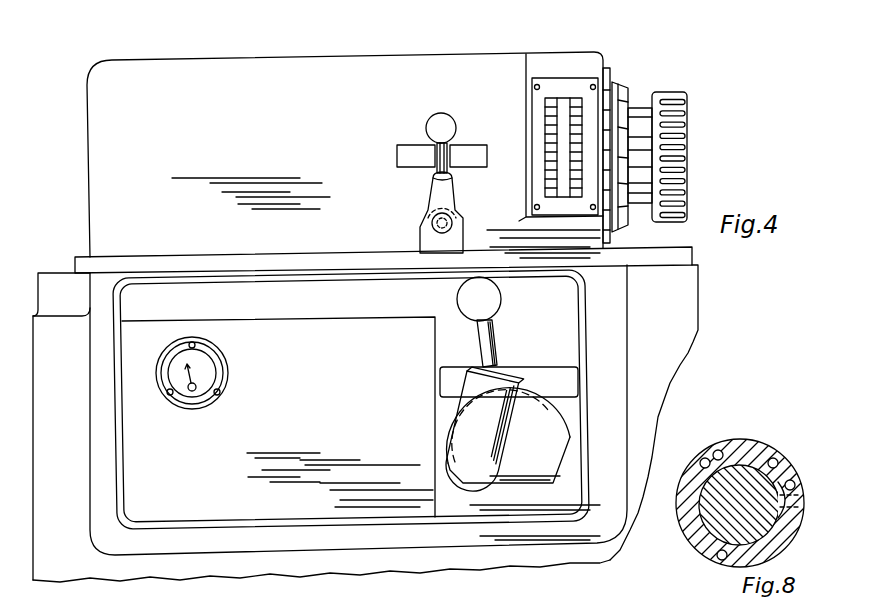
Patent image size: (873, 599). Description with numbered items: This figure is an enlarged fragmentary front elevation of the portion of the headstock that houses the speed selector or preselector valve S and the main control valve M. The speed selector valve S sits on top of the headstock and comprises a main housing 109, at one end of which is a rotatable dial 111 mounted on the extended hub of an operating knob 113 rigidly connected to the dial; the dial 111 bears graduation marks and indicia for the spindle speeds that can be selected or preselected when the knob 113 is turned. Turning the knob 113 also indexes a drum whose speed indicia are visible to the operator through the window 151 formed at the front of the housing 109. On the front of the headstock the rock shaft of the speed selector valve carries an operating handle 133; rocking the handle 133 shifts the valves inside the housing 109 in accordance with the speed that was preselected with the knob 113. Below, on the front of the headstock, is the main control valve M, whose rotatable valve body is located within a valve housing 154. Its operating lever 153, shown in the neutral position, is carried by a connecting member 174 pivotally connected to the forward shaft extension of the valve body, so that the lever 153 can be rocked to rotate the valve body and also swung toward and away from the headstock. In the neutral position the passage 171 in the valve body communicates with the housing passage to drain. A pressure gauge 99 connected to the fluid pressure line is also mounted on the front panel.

In FIG. 4, the speed selector valve S is at (362, 50).
In FIG. 4, the main housing 109 is at (345, 155).
In FIG. 4, the window 151 is at (563, 100).
In FIG. 4, the rotatable dial 111 is at (627, 90).
In FIG. 4, the operating knob 113 is at (687, 108).
In FIG. 4, the operating handle 133 is at (447, 189).
In FIG. 4, the valve housing 154 is at (365, 429).
In FIG. 4, the pressure gauge 99 is at (218, 373).
In FIG. 4, the operating lever 153 is at (493, 338).
In FIG. 4, the main control valve M is at (560, 358).
In FIG. 4, the connecting member 174 is at (530, 420).
In FIG. 8, the passage 171 is at (787, 478).